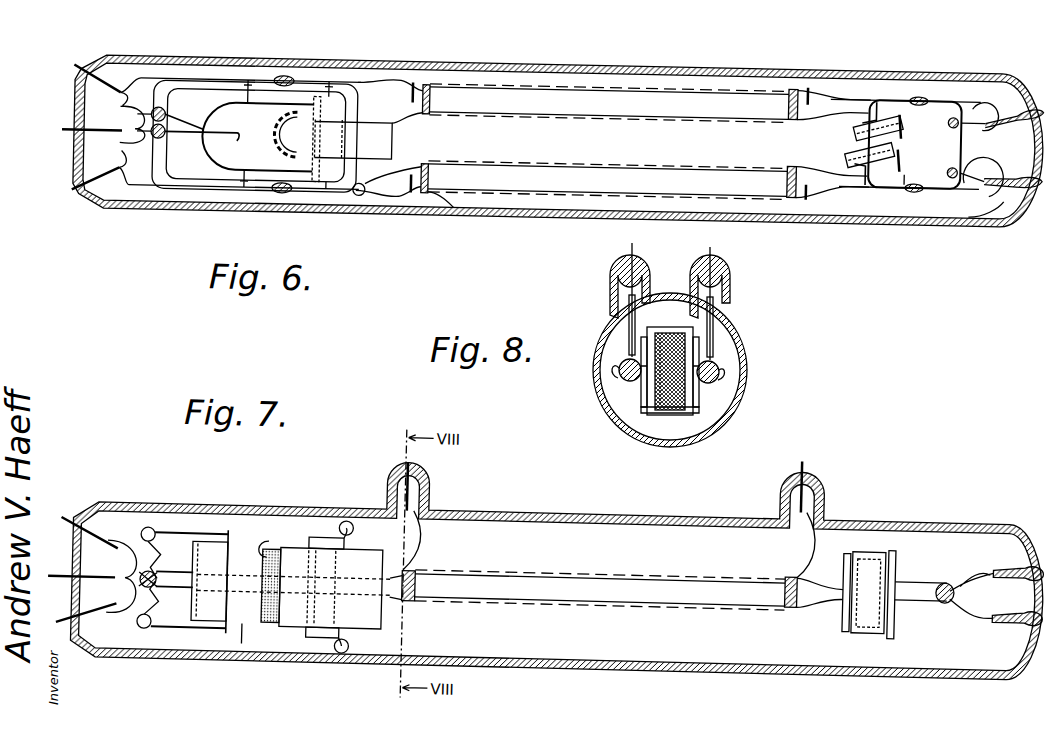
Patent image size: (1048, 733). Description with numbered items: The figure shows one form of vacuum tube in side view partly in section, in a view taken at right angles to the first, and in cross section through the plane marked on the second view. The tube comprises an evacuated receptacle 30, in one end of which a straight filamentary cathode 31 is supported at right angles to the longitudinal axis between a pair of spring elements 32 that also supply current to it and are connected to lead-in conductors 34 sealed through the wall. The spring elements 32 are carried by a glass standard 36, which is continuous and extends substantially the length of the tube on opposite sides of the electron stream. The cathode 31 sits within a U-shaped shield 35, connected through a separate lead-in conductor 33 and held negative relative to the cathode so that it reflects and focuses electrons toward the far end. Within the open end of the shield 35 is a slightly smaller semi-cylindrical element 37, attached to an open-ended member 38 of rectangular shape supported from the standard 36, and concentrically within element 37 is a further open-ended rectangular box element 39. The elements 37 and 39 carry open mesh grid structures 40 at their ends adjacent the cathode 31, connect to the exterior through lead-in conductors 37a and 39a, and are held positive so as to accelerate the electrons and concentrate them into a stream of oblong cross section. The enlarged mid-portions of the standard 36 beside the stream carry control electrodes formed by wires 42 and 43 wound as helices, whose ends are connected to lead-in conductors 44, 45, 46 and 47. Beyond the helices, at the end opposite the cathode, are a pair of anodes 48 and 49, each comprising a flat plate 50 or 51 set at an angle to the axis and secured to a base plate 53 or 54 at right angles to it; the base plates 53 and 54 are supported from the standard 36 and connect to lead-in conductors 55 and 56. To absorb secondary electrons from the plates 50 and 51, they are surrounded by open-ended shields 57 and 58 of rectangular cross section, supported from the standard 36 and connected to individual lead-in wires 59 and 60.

In FIG. 6, the evacuated receptacle 30 is at (625, 56).
In FIG. 8, the evacuated receptacle 30 is at (746, 362).
In FIG. 7, the evacuated receptacle 30 is at (577, 503).
In FIG. 6, the straight filamentary cathode 31 is at (238, 134).
In FIG. 7, the straight filamentary cathode 31 is at (228, 539).
In FIG. 6, the spring elements 32 is at (172, 132).
In FIG. 7, the spring elements 32 is at (158, 531).
In FIG. 6, the lead-in conductor 33 is at (72, 130).
In FIG. 7, the lead-in conductor 33 is at (113, 577).
In FIG. 7, the lead-in conductors 34 is at (72, 524).
In FIG. 6, the U-shaped shield 35 is at (260, 99).
In FIG. 8, the U-shaped shield 35 is at (641, 345).
In FIG. 7, the U-shaped shield 35 is at (254, 634).
In FIG. 6, the glass standard 36 is at (163, 108).
In FIG. 8, the glass standard 36 is at (620, 378).
In FIG. 7, the glass standard 36 is at (153, 582).
In FIG. 6, the semi-cylindrical element 37 is at (317, 92).
In FIG. 8, the semi-cylindrical element 37 is at (699, 345).
In FIG. 7, the semi-cylindrical element 37 is at (318, 553).
In FIG. 6, the lead-in conductor 37a is at (150, 184).
In FIG. 6, the open-ended member 38 is at (340, 115).
In FIG. 8, the open-ended member 38 is at (668, 330).
In FIG. 7, the open-ended member 38 is at (276, 545).
In FIG. 6, the open-ended box element 39 is at (392, 118).
In FIG. 8, the open-ended box element 39 is at (654, 412).
In FIG. 7, the open-ended box element 39 is at (390, 600).
In FIG. 6, the lead-in conductor 39a is at (152, 77).
In FIG. 6, the open mesh grid structures 40 is at (278, 125).
In FIG. 8, the open mesh grid structures 40 is at (672, 405).
In FIG. 7, the open mesh grid structures 40 is at (268, 537).
In FIG. 6, the control electrode helix 42 is at (430, 82).
In FIG. 8, the control electrode helix 42 is at (720, 376).
In FIG. 6, the control electrode helix 43 is at (455, 200).
In FIG. 8, the control electrode helix 43 is at (641, 398).
In FIG. 6, the lead-in conductor 44 is at (412, 188).
In FIG. 8, the lead-in conductor 44 is at (628, 246).
In FIG. 6, the lead-in conductor 45 is at (422, 78).
In FIG. 8, the lead-in conductor 45 is at (714, 252).
In FIG. 7, the lead-in conductor 45 is at (408, 458).
In FIG. 6, the lead-in conductor 46 is at (815, 186).
In FIG. 6, the lead-in conductor 47 is at (808, 73).
In FIG. 7, the lead-in conductor 47 is at (802, 452).
In FIG. 6, the anode 48 is at (899, 98).
In FIG. 7, the anode 48 is at (868, 533).
In FIG. 6, the anode 49 is at (899, 155).
In FIG. 6, the flat plate 50 is at (857, 115).
In FIG. 7, the flat plate 50 is at (850, 548).
In FIG. 6, the flat plate 51 is at (848, 142).
In FIG. 6, the base plate 53 is at (940, 84).
In FIG. 7, the base plate 53 is at (895, 538).
In FIG. 6, the base plate 54 is at (905, 168).
In FIG. 6, the lead-in conductor 55 is at (1020, 102).
In FIG. 7, the lead-in conductor 55 is at (996, 598).
In FIG. 6, the lead-in conductor 56 is at (1015, 160).
In FIG. 6, the open-ended shield 57 is at (876, 86).
In FIG. 7, the open-ended shield 57 is at (846, 535).
In FIG. 6, the open-ended shield 58 is at (866, 169).
In FIG. 6, the lead-in wire 59 is at (980, 86).
In FIG. 7, the lead-in wire 59 is at (980, 553).
In FIG. 6, the lead-in wire 60 is at (970, 199).